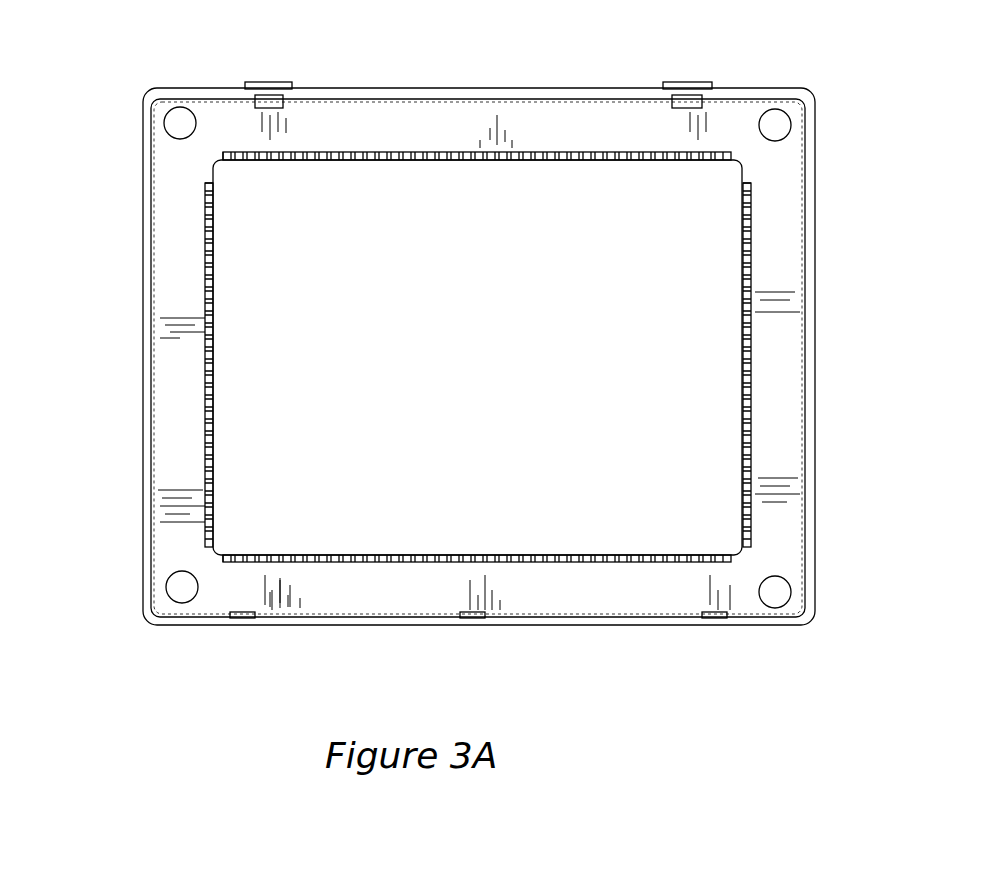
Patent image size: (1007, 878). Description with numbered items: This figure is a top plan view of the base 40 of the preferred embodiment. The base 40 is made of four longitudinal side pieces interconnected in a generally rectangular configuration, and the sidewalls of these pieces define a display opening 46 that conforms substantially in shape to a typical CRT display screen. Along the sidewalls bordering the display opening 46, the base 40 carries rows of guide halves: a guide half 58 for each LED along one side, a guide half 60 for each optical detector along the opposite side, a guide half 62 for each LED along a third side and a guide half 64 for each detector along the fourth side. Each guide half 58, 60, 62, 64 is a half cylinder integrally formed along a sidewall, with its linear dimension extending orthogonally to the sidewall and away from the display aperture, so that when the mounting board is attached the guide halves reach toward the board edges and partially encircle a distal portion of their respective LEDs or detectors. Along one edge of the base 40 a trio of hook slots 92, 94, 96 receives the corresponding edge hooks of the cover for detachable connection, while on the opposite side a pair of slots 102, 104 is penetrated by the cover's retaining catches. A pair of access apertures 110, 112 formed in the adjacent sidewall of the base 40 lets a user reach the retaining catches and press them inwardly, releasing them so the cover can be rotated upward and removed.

The base 40 is at (142, 293).
The display opening 46 is at (270, 448).
The guide half 58 is at (205, 193).
The guide half 60 is at (752, 193).
The guide half 62 is at (237, 562).
The guide half 64 is at (238, 152).
The hook slot 92 is at (715, 623).
The hook slot 94 is at (463, 622).
The hook slot 96 is at (238, 620).
The slot 102 is at (265, 100).
The slot 104 is at (690, 100).
The access aperture 110 is at (665, 83).
The access aperture 112 is at (288, 82).